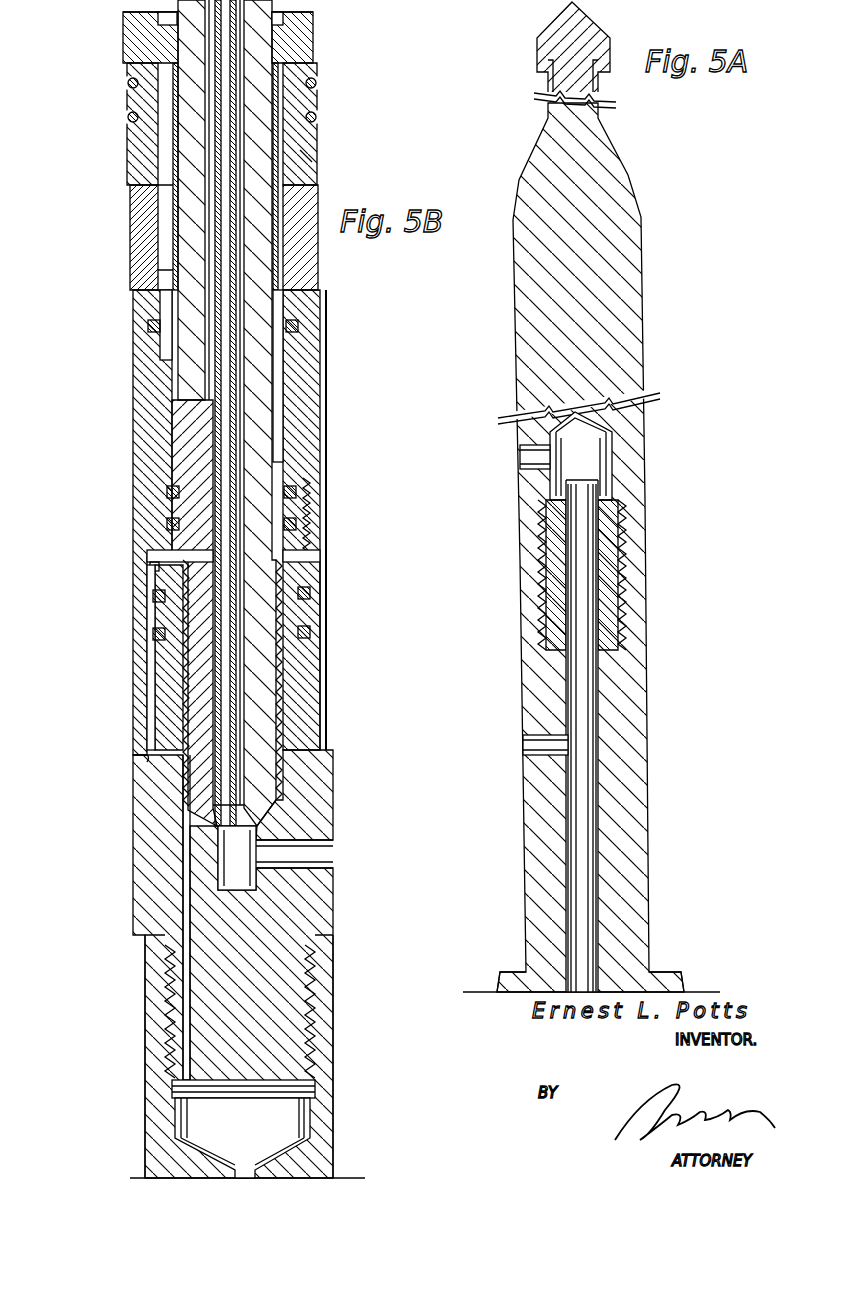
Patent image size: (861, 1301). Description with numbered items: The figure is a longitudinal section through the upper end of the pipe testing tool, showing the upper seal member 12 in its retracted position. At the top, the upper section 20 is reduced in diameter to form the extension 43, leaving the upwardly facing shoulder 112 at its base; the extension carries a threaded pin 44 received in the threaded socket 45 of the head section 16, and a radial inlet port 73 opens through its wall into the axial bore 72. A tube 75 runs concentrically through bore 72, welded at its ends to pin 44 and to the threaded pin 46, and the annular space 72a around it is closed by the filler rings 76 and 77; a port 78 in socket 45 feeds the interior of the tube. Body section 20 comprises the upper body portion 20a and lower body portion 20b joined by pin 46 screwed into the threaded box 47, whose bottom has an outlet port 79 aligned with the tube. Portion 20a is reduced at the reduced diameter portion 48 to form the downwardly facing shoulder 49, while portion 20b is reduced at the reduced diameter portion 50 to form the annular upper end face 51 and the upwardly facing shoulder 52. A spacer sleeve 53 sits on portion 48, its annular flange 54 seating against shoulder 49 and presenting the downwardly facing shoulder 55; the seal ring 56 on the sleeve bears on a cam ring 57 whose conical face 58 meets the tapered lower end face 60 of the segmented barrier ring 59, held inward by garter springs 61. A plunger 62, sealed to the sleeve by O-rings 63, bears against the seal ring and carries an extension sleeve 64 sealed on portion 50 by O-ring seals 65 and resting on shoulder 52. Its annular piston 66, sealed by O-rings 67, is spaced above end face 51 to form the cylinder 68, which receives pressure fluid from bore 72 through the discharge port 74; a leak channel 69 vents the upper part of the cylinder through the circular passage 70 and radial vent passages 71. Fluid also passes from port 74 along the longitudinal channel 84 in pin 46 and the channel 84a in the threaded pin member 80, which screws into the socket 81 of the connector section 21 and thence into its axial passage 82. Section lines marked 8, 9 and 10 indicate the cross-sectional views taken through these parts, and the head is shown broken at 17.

In FIG. 5B, the upper section 20 is at (120, 17).
In FIG. 5A, the upper section 20 is at (500, 985).
In FIG. 5B, the upper body portion 20a is at (188, 243).
In FIG. 5B, the lower body portion 20b is at (150, 822).
In FIG. 5B, the annular flange 54 is at (158, 20).
In FIG. 5B, the downwardly facing annular shoulder 49 is at (128, 84).
In FIG. 5B, the garter springs 61 is at (128, 118).
In FIG. 5B, the barrier ring 59 is at (138, 137).
In FIG. 5B, the spacer sleeve 53 is at (165, 172).
In FIG. 5B, the annular seal ring 56 is at (138, 217).
In FIG. 5B, the leak channel 69 is at (170, 268).
In FIG. 5B, the O-rings 63 is at (148, 326).
In FIG. 5B, the tube 75 is at (218, 378).
In FIG. 5A, the tube 75 is at (597, 810).
In FIG. 5B, the axial bore 72 is at (213, 408).
In FIG. 5A, the axial bore 72 is at (570, 795).
In FIG. 5B, the reduced diameter portion 48 is at (180, 428).
In FIG. 5B, the annular space 72a is at (210, 445).
In FIG. 5A, the annular space 72a is at (566, 845).
In FIG. 5B, the discharge port 74 is at (160, 548).
In FIG. 5B, the cylinder 68 is at (152, 566).
In FIG. 5B, the annular upper end face 51 is at (165, 590).
In FIG. 5B, the longitudinal channel 84 is at (195, 605).
In FIG. 5B, the reduced diameter portion 50 is at (150, 707).
In FIG. 5B, the upwardly facing shoulder 52 is at (145, 765).
In FIG. 5B, the channel 84a is at (182, 868).
In FIG. 5B, the radial vent passages 71 is at (300, 8).
In FIG. 5B, the circular passage 70 is at (345, 30).
In FIG. 5B, the downwardly facing shoulder 55 is at (315, 58).
In FIG. 5B, the lower end face 60 is at (300, 137).
In FIG. 5B, the conical face 58 is at (305, 160).
In FIG. 5B, the cam ring 57 is at (312, 172).
In FIG. 5B, the upper seal member 12 is at (328, 332).
In FIG. 5B, the plunger 62 is at (312, 397).
In FIG. 5B, the annular piston 66 is at (283, 468).
In FIG. 5B, the O-rings 67 is at (296, 490).
In FIG. 5B, the extension sleeve 64 is at (316, 505).
In FIG. 5B, the threaded box 47 is at (300, 566).
In FIG. 5B, the threaded pin 46 is at (292, 580).
In FIG. 5B, the O-ring seals 65 is at (310, 593).
In FIG. 5B, the filler ring 77 is at (250, 778).
In FIG. 5B, the outlet port 79 is at (312, 848).
In FIG. 5B, the externally threaded pin member 80 is at (292, 968).
In FIG. 5B, the internally threaded socket 81 is at (318, 1012).
In FIG. 5B, the extended connector section 21 is at (335, 1145).
In FIG. 5B, the axial passage 82 is at (250, 1168).
In FIG. 5B, the section line 8- 8 is at (78, 103).
In FIG. 5B, the section line 9- 9 is at (392, 678).
In FIG. 5B, the section line 10- 10 is at (400, 15).
In FIG. 5A, the top fitting 17 is at (545, 52).
In FIG. 5A, the head section 16 is at (645, 395).
In FIG. 5A, the port 78 is at (525, 462).
In FIG. 5A, the threaded socket 45 is at (635, 520).
In FIG. 5A, the threaded pin 44 is at (612, 550).
In FIG. 5A, the filler ring 76 is at (600, 568).
In FIG. 5A, the radial inlet port 73 is at (528, 750).
In FIG. 5A, the reduced diameter portion 43 is at (645, 872).
In FIG. 5A, the upwardly facing shoulder 112 is at (675, 975).